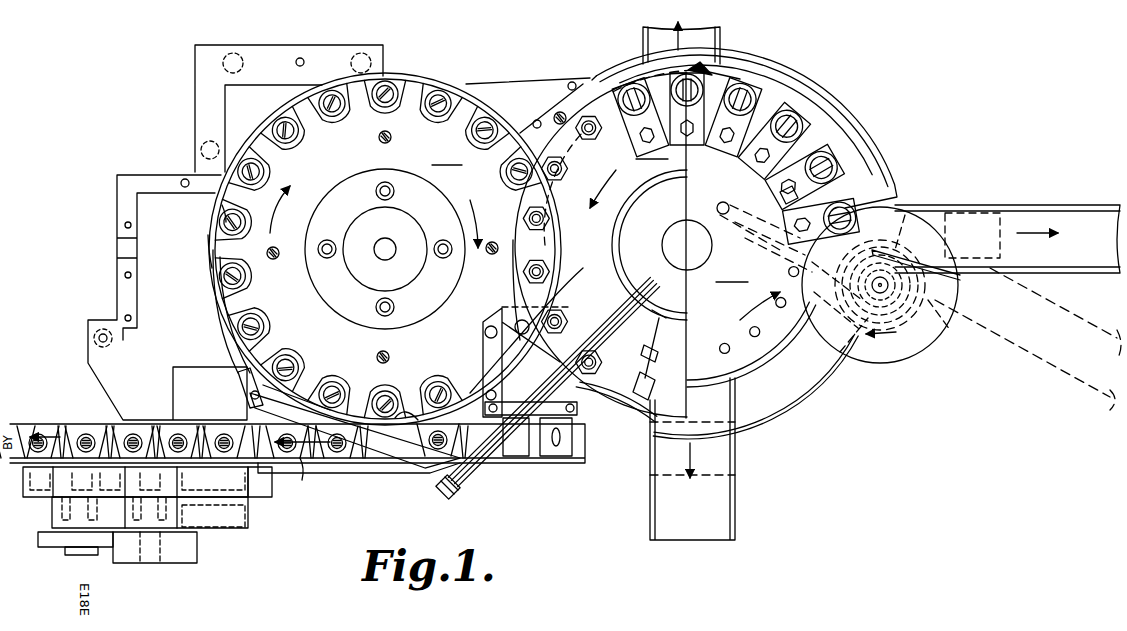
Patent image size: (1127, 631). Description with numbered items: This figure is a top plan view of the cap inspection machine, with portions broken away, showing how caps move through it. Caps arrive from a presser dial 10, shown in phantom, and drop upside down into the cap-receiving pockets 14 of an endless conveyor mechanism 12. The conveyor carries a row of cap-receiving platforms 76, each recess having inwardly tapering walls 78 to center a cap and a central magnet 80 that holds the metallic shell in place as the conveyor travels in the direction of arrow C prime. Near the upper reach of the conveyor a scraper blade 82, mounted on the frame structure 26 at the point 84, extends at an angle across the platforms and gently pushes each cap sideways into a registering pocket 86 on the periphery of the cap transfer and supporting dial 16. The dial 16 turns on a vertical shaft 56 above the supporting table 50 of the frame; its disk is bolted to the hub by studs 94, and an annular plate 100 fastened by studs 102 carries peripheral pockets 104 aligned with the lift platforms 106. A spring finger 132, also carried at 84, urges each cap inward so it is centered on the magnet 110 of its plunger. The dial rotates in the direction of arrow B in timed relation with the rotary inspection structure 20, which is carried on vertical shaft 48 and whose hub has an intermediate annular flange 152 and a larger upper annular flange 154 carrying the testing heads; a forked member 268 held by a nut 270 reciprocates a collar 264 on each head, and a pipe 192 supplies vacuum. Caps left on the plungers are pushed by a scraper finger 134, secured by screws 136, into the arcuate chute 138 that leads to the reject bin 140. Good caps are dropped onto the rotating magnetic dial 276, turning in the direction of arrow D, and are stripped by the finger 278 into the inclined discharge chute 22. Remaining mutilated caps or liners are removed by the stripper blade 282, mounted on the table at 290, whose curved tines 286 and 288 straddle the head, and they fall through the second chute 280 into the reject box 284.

The presser dial 10 is at (272, 497).
The endless conveyor mechanism 12 is at (352, 474).
The cap-receiving pockets 14 is at (292, 432).
The cap transfer and supporting dial 16 is at (210, 260).
The rotary inspection structure 20 is at (608, 432).
The discharge chute 22 is at (1058, 205).
The frame structure 26 is at (117, 298).
The vertical shaft 48 is at (692, 247).
The supporting table 50 is at (178, 238).
The vertical shaft 56 is at (393, 251).
The cap-receiving platforms 76 is at (18, 428).
The tapering walls 78 is at (38, 430).
The magnet 80 is at (134, 431).
The scraper blade 82 is at (412, 482).
The mounting point 84 is at (258, 402).
The pocket 86 is at (406, 420).
The studs 94 is at (386, 184).
The annular plate 100 is at (385, 233).
The studs 102 is at (276, 260).
The pockets 104 is at (388, 92).
The lift platform 106 is at (296, 390).
The magnet 110 is at (226, 224).
The spring finger 132 is at (232, 340).
The scraper finger 134 is at (513, 322).
The screws 136 is at (505, 402).
The chute 138 is at (556, 296).
The reject bin 140 is at (736, 462).
The intermediate annular flange 152 is at (751, 294).
The upper annular flange 154 is at (627, 245).
The pipe 192 is at (468, 470).
The collar 264 is at (836, 162).
The forked member 268 is at (782, 165).
The nut 270 is at (778, 194).
The rotating magnetic dial 276 is at (933, 352).
The finger 278 is at (955, 262).
The second chute 280 is at (858, 130).
The stripper blade 282 is at (712, 68).
The reject box 284 is at (726, 36).
The curved tine 286 is at (742, 79).
The curved tine 288 is at (756, 101).
The mounting point 290 is at (558, 113).